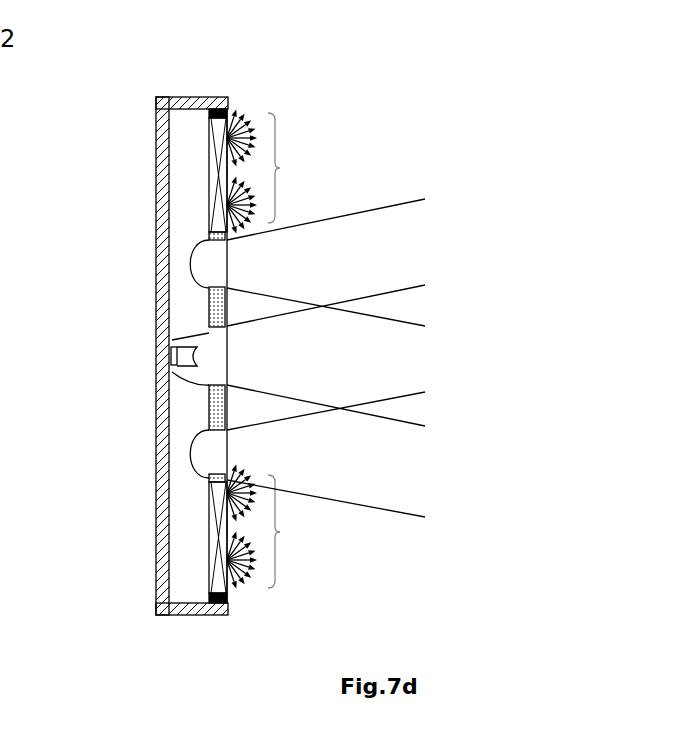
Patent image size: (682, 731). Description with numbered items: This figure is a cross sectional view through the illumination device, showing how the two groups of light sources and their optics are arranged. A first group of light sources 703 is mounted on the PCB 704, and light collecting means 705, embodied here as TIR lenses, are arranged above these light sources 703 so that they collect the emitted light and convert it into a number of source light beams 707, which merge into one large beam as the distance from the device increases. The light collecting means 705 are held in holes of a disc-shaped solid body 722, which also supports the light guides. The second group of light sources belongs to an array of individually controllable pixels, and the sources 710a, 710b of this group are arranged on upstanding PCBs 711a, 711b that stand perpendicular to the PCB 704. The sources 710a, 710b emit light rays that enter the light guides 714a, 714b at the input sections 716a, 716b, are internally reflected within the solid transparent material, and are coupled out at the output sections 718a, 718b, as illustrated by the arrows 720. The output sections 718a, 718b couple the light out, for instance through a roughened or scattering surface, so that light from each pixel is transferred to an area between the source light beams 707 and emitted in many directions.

The PCB 704 is at (162, 197).
The upstanding PCB 711a is at (190, 97).
The upstanding PCB 711b is at (190, 615).
The light source 710a is at (228, 108).
The light source 710b is at (228, 604).
The light guide 714a is at (221, 160).
The light guide 714b is at (220, 530).
The input section 716a is at (210, 122).
The input section 716b is at (224, 590).
The arrows 720 is at (235, 119).
The output section 718a is at (306, 168).
The output section 718b is at (306, 531).
The source light beams 707 is at (334, 358).
The light collecting means 705 is at (210, 258).
The solid body 722 is at (172, 340).
The light sources 703 is at (171, 356).